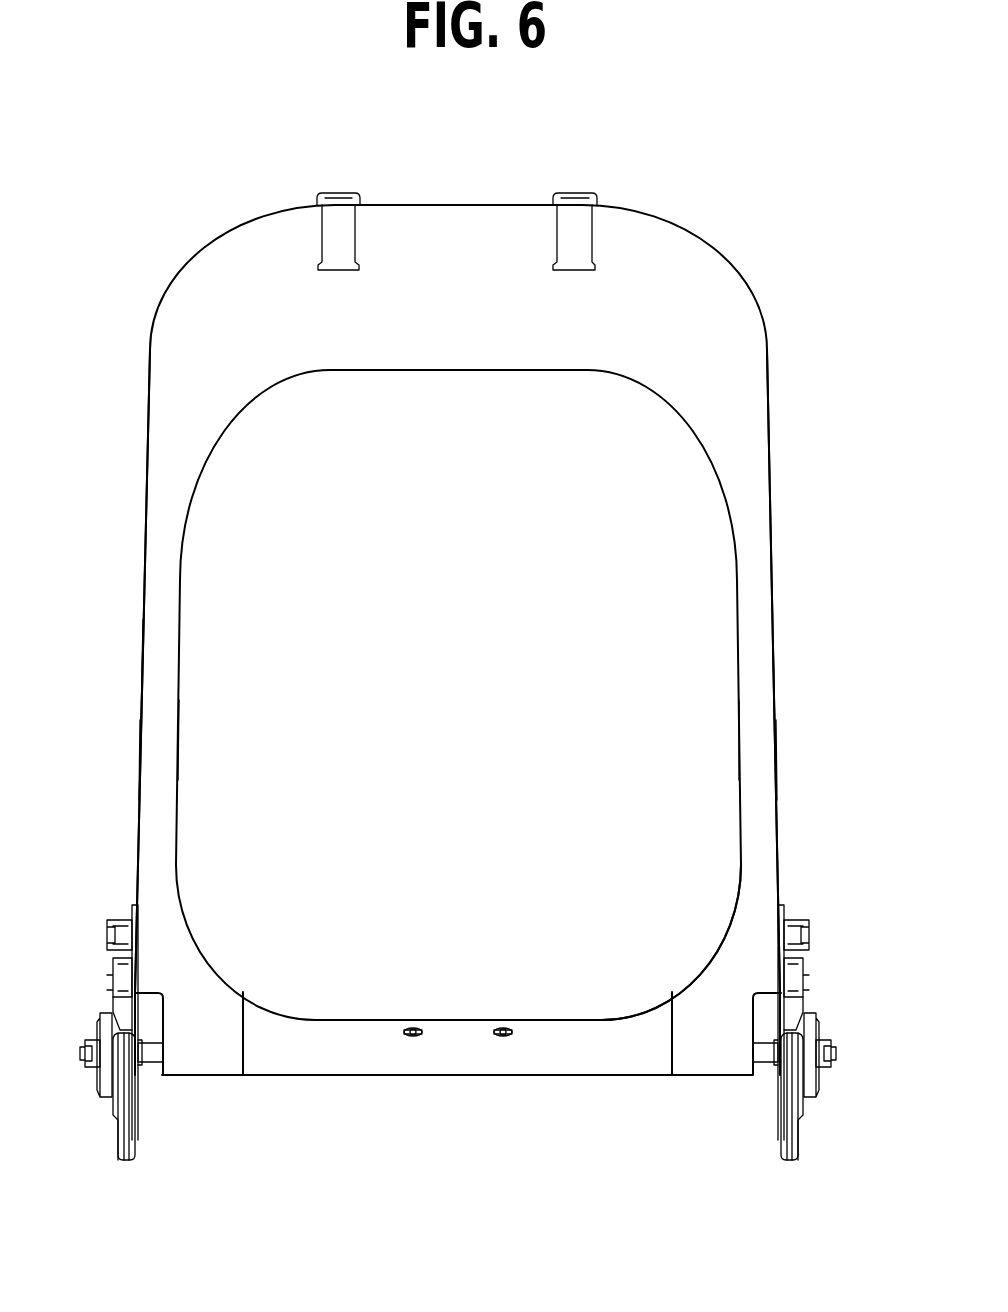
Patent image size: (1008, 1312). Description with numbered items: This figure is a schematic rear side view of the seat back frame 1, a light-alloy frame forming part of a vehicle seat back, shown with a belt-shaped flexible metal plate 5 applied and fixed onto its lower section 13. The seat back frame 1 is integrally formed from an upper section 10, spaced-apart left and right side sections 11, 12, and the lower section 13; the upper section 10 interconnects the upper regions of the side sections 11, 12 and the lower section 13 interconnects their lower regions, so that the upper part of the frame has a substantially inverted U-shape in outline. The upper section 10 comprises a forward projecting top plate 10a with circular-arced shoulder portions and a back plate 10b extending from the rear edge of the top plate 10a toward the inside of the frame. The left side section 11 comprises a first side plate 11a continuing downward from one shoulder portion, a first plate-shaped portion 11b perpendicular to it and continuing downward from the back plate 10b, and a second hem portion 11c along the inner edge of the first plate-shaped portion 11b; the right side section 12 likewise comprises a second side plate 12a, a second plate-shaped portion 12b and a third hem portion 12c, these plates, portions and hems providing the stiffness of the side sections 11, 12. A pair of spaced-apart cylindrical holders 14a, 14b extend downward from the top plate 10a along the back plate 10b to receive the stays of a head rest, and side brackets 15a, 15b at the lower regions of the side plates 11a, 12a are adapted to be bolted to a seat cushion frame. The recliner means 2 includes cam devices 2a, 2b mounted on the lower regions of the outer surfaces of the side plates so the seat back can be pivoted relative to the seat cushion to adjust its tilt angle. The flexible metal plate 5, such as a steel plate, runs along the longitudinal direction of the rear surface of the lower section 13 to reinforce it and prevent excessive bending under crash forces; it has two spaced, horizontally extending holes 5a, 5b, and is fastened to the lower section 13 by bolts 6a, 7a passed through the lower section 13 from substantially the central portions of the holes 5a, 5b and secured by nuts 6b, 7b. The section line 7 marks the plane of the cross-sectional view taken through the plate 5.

The seat back frame 1 is at (727, 253).
The recliner means 2 is at (820, 995).
The cam device 2a is at (818, 1025).
The cam device 2b is at (100, 1028).
The belt-shaped flexible metal plate 5 is at (465, 1055).
The horizontally extending hole 5a is at (413, 1028).
The horizontally extending hole 5b is at (505, 1028).
The bolt 6a is at (410, 1040).
The nut 6b is at (503, 1030).
The section line 7 is at (340, 1010).
The bolt 7a is at (400, 1088).
The nut 7b is at (485, 953).
The upper section 10 is at (473, 203).
The top plate 10a is at (423, 203).
The back plate 10b is at (453, 335).
The left side section 11 is at (770, 525).
The first side plate 11a is at (778, 690).
The first plate-shaped portion 11b is at (758, 752).
The second hem portion 11c is at (738, 712).
The right side section 12 is at (143, 520).
The second side plate 12a is at (140, 668).
The second plate-shaped portion 12b is at (158, 755).
The third hem portion 12c is at (180, 735).
The lower section 13 is at (692, 1015).
The cylindrical holder 14a is at (577, 193).
The cylindrical holder 14b is at (335, 193).
The side bracket 15a is at (786, 1150).
The side bracket 15b is at (131, 1150).